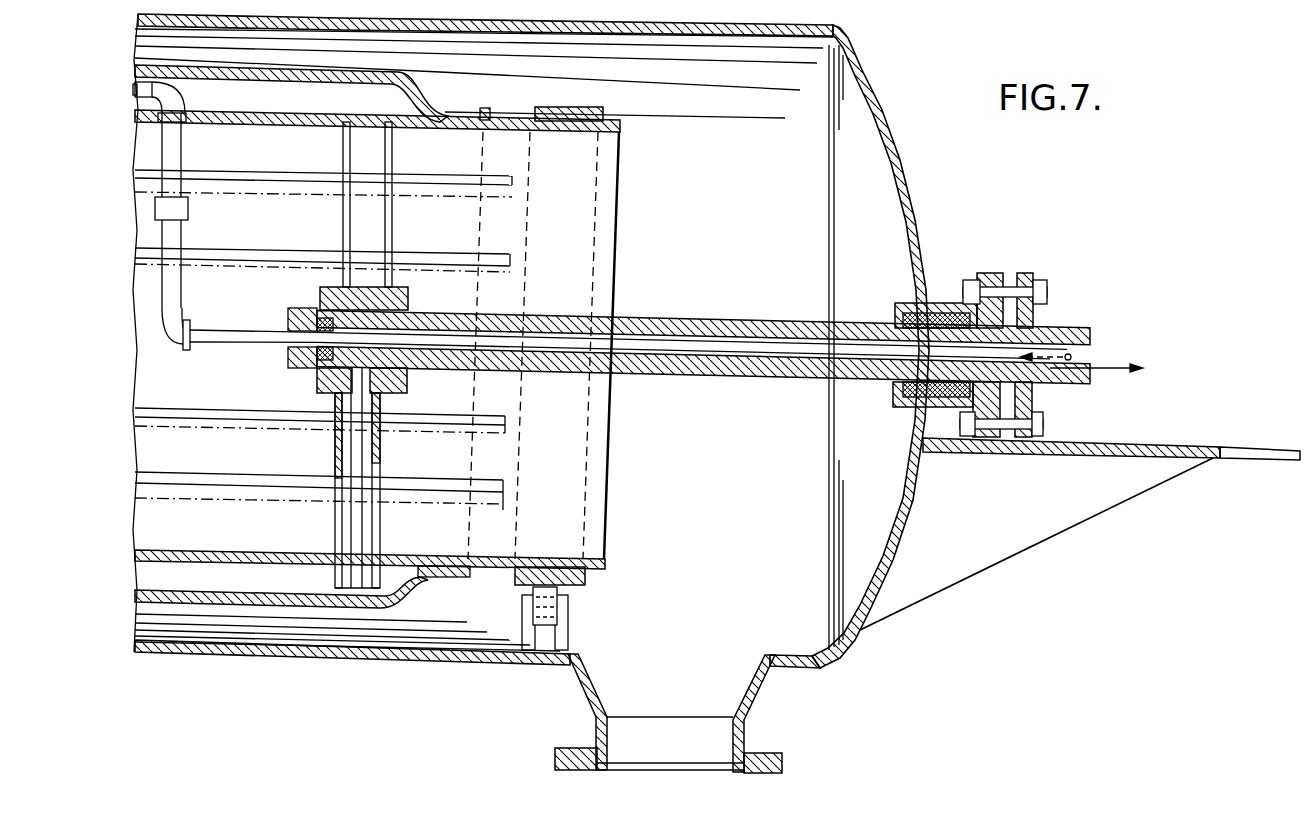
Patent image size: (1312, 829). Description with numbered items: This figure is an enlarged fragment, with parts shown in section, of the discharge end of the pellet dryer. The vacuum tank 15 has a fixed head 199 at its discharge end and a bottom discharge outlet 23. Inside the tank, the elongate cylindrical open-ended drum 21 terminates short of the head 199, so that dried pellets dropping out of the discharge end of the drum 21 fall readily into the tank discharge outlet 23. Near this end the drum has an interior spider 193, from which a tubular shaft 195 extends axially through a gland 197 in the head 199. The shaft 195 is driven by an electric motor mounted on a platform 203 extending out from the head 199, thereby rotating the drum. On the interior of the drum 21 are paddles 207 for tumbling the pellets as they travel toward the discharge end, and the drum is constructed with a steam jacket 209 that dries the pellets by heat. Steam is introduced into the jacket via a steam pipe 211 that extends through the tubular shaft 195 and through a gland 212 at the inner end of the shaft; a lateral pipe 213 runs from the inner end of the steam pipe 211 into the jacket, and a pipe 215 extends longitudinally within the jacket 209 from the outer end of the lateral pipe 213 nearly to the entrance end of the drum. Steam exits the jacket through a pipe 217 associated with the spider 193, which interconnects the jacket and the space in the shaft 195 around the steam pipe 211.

The vacuum tank 15 is at (590, 21).
The drum 21 is at (606, 565).
The bottom discharge outlet 23 is at (722, 693).
The interior spider 193 is at (414, 288).
The tubular shaft 195 is at (727, 375).
The gland 197 is at (1027, 277).
The head 199 is at (914, 168).
The platform 203 is at (1226, 455).
The paddles 207 is at (508, 257).
The steam jacket 209 is at (400, 90).
The steam pipe 211 is at (226, 337).
The gland 212 is at (290, 354).
The lateral pipe 213 is at (168, 229).
The pipe 215 is at (172, 85).
The pipe 217 is at (340, 458).